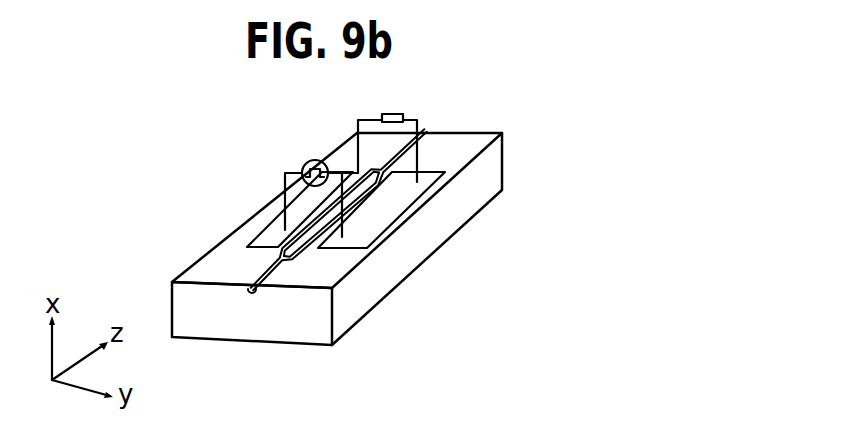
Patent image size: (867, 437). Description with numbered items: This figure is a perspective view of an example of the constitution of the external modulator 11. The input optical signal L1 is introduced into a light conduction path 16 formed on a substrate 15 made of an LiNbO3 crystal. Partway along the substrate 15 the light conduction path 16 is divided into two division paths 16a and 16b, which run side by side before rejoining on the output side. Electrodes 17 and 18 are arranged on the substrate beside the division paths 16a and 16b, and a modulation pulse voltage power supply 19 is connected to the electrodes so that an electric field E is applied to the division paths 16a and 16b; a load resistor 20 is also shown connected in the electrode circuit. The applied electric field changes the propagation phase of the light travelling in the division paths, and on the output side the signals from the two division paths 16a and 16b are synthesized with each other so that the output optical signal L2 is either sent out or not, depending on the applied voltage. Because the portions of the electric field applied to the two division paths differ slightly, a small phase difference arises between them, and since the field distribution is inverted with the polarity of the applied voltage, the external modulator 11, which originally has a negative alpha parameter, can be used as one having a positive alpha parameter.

The external modulator 11 is at (257, 163).
The substrate 15 is at (478, 179).
The light conduction path 16 is at (274, 284).
The division path 16a is at (298, 231).
The division path 16b is at (374, 200).
The electrode 17 is at (347, 163).
The electrode 18 is at (373, 225).
The modulation pulse voltage power supply 19 is at (305, 164).
The load resistor 20 is at (388, 113).
The input optical signal L1 is at (241, 297).
The output optical signal L2 is at (430, 125).